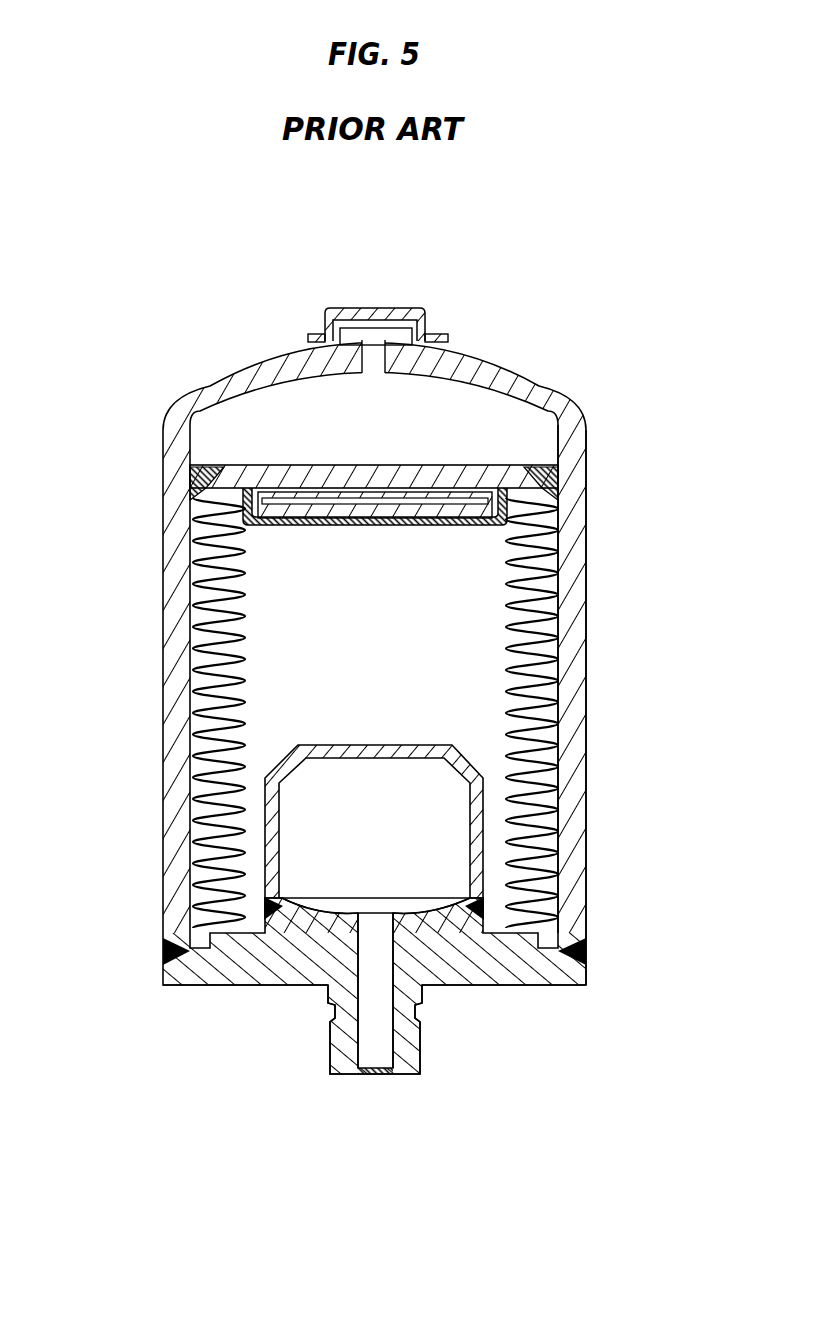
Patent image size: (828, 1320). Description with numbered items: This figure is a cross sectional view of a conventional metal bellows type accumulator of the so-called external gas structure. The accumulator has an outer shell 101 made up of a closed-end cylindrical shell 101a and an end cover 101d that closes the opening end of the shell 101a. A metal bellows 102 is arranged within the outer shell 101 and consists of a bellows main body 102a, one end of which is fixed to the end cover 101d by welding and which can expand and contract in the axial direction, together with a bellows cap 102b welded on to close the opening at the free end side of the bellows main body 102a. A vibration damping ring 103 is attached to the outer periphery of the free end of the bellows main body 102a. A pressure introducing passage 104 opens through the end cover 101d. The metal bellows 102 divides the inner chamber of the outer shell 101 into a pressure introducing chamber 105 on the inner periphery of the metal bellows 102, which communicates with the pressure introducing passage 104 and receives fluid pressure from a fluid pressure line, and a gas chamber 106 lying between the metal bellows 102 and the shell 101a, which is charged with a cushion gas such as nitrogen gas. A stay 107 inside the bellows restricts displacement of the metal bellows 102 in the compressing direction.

The outer shell 101 is at (178, 367).
The closed-end cylindrical shell 101a is at (587, 605).
The end cover 101d is at (468, 975).
The metal bellows 102 is at (307, 453).
The bellows main body 102a is at (190, 638).
The bellows cap 102b is at (449, 478).
The vibration damping ring 103 is at (565, 478).
The pressure introducing passage 104 is at (372, 1060).
The pressure introducing chamber 105 is at (287, 687).
The gas chamber 106 is at (437, 400).
The stay 107 is at (421, 745).